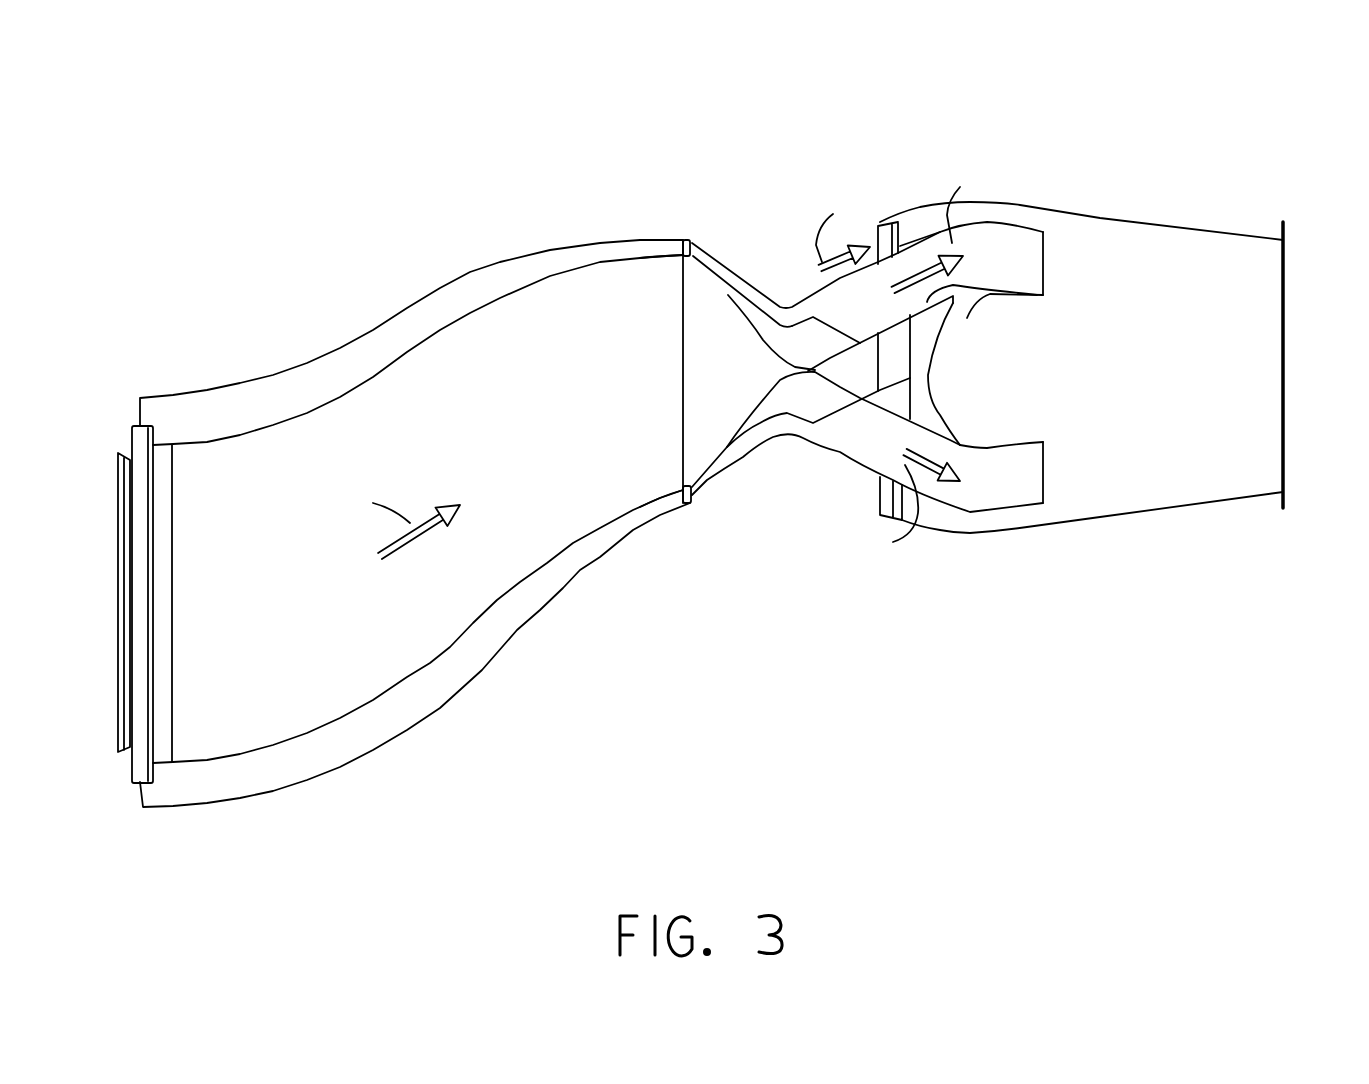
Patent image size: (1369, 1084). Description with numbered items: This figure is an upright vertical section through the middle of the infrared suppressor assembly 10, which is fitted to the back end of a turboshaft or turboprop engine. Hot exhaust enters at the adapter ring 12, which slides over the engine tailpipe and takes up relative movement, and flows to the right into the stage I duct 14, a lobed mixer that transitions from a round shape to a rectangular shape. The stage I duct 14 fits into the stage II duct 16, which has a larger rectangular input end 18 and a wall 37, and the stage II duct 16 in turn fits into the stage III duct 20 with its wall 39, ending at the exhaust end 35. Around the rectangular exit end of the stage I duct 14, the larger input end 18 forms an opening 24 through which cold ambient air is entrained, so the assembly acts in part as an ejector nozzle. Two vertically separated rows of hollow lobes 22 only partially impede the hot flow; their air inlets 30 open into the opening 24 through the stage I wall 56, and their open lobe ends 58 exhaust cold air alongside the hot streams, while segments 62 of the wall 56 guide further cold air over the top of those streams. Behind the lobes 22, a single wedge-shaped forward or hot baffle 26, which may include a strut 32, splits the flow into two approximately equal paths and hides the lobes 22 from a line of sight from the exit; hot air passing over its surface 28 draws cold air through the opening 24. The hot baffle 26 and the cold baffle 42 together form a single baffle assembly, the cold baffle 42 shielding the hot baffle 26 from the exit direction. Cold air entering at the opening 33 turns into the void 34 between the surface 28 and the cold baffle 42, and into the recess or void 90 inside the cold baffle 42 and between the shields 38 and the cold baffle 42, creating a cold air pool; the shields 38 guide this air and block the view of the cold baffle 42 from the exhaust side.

The infrared suppressor assembly 10 is at (531, 113).
The adapter ring 12 is at (142, 540).
The stage I duct 14 is at (393, 360).
The stage II duct 16 is at (817, 291).
The rectangular opening 18 is at (685, 240).
The stage III duct 20 is at (1201, 224).
The lobes 22 is at (757, 398).
The opening 24 is at (678, 243).
The forward baffle 26 is at (893, 412).
The surface 28 is at (930, 296).
The air inlets 30 is at (693, 260).
The strut 32 is at (860, 390).
The opening 33 is at (878, 232).
The void 34 is at (919, 349).
The exhaust end 35 is at (1288, 312).
The wall 37 is at (988, 223).
The shields 38 is at (1020, 297).
The wall 39 is at (1120, 205).
The cold baffle 42 is at (1020, 288).
The stage I wall 56 is at (683, 278).
The lobe ends 58 is at (830, 323).
The segments 62 is at (775, 310).
The void 90 is at (967, 366).